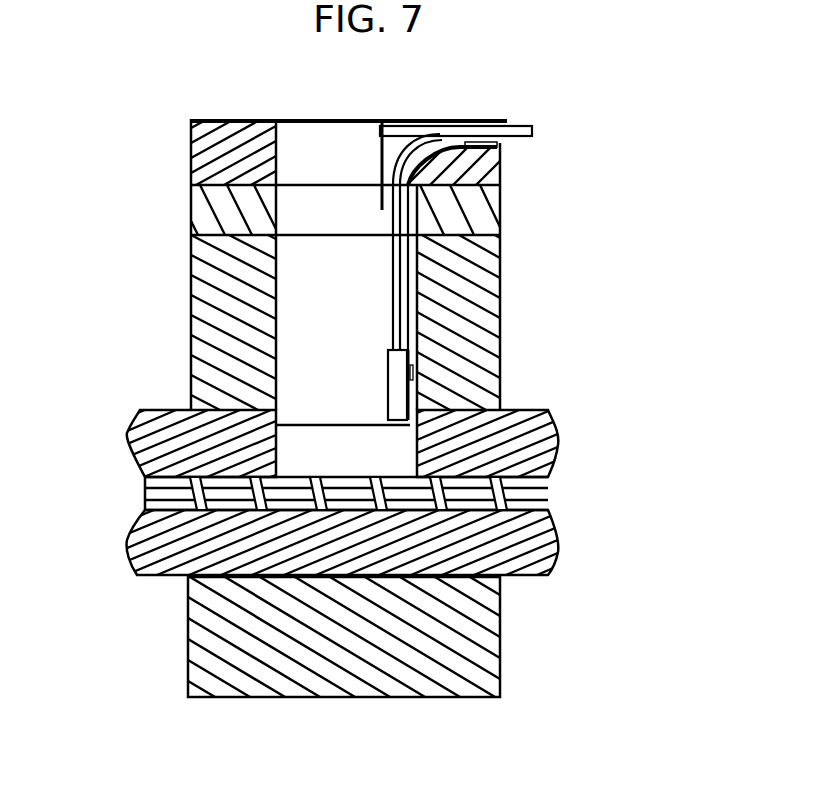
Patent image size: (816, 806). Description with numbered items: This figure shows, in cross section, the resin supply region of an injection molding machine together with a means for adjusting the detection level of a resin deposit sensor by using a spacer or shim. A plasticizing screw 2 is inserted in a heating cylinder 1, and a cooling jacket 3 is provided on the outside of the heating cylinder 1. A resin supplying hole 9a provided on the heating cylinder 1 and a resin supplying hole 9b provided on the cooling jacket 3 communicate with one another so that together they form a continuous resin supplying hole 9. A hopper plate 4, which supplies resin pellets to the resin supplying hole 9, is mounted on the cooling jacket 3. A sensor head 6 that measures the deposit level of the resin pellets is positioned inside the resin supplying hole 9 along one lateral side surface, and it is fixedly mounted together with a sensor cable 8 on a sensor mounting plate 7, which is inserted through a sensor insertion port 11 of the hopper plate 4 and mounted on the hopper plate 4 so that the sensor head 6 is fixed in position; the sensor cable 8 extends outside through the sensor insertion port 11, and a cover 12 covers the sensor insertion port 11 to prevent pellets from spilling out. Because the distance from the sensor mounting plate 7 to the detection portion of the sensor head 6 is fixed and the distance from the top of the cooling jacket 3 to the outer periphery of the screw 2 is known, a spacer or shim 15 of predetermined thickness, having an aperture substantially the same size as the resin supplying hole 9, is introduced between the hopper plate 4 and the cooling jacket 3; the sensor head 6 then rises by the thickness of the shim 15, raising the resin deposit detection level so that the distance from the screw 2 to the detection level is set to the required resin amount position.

The heating cylinder 1 is at (540, 433).
The plasticizing screw 2 is at (535, 486).
The cooling jacket 3 is at (493, 303).
The hopper plate 4 is at (200, 146).
The sensor head 6 is at (400, 402).
The sensor mounting plate 7 is at (412, 262).
The sensor cable 8 is at (523, 127).
The resin supplying hole 9 is at (85, 258).
The resin supplying hole 9a is at (327, 427).
The resin supplying hole 9b is at (305, 285).
The sensor insertion port 11 is at (505, 146).
The cover 12 is at (370, 157).
The spacer or shim 15 is at (227, 200).